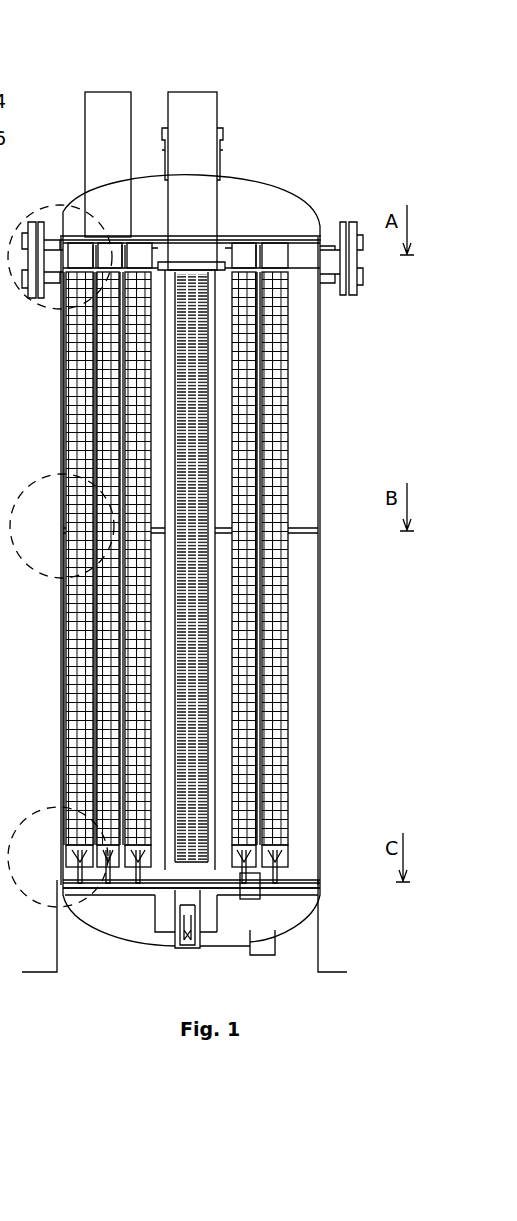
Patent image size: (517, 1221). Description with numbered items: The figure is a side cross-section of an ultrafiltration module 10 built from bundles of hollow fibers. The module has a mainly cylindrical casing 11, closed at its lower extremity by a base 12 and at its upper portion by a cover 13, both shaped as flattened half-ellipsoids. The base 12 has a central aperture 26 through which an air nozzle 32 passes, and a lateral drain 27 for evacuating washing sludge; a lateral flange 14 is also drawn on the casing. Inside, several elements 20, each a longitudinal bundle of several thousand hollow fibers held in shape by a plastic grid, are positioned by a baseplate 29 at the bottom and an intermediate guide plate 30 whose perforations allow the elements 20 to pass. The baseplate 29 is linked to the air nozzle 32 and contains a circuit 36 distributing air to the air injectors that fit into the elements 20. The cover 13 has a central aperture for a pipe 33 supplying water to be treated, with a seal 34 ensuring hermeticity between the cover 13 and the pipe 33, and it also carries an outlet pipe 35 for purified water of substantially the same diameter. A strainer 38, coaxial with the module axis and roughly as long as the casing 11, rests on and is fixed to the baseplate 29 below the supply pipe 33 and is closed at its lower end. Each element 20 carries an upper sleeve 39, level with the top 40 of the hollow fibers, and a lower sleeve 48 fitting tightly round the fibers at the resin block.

The filtration module 10 is at (356, 327).
The casing 11 is at (320, 410).
The base 12 is at (300, 930).
The cover 13 is at (283, 192).
The side flange nozzle 14 is at (355, 238).
The element 20 is at (82, 667).
The central aperture 26 is at (170, 940).
The lateral drain 27 is at (277, 946).
The baseplate 29 is at (296, 882).
The intermediate guide plate 30 is at (303, 532).
The air nozzle 32 is at (187, 950).
The supply pipe 33 is at (217, 200).
The seal 34 is at (222, 152).
The outlet pipe 35 is at (85, 145).
The circuit 36 is at (103, 886).
The strainer 38 is at (210, 655).
The upper sleeve 39 is at (292, 268).
The top of the hollow fibers 40 is at (278, 243).
The lower sleeve 48 is at (277, 842).